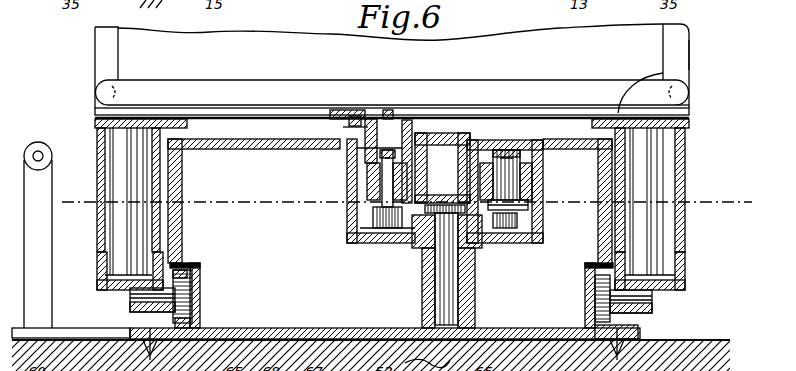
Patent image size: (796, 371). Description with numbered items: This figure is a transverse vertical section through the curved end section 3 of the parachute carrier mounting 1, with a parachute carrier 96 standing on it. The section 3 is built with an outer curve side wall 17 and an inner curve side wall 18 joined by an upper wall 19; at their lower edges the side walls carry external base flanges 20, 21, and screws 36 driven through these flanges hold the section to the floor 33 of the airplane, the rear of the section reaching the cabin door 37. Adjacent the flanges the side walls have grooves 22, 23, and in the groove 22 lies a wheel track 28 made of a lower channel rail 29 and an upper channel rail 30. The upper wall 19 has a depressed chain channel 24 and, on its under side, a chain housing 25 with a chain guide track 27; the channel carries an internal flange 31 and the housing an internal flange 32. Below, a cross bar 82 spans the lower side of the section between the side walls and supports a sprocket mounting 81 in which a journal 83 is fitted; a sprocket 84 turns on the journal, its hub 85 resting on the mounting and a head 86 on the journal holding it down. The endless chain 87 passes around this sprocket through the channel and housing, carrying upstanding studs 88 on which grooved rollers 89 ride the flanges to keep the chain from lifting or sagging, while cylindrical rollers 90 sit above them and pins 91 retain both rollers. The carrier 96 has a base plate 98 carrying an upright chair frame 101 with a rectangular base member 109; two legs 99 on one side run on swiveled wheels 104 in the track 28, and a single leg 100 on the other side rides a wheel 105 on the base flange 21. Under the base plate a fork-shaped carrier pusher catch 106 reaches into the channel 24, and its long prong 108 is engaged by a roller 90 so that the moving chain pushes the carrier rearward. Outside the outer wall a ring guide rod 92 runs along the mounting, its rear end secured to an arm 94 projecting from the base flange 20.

The parachute carrier mounting 1 is at (392, 125).
The curved end section 3 is at (164, 226).
The outer curve side wall 17 is at (183, 184).
The inner curve side wall 18 is at (600, 225).
The upper wall 19 is at (300, 149).
The base flange 20 is at (70, 199).
The base flange 21 is at (640, 330).
The groove 22 is at (186, 293).
The groove 23 is at (592, 302).
The chain channel 24 is at (360, 140).
The chain housing 25 is at (548, 170).
The chain guide track 27 is at (532, 216).
The wheel track 28 is at (167, 318).
The lower channel rail 29 is at (193, 328).
The upper channel rail 30 is at (187, 263).
The internal flange 31 is at (350, 186).
The internal flange 32 is at (570, 180).
The floor 33 is at (713, 339).
The screws 36 is at (158, 342).
The door 37 is at (442, 168).
The sprocket mounting 81 is at (430, 284).
The cross bar 82 is at (317, 328).
The journal 83 is at (450, 296).
The sprocket 84 is at (412, 225).
The hub 85 is at (478, 248).
The head 86 is at (445, 199).
The endless chain 87 is at (369, 219).
The studs 88 is at (387, 163).
The grooved rollers 89 is at (368, 178).
The cylindrical rollers 90 is at (465, 142).
The pins 91 is at (420, 148).
The ring guide rod 92 is at (34, 141).
The arm 94 is at (67, 328).
The parachute carrier 96 is at (377, 66).
The base plate 98 is at (690, 75).
The legs 99 is at (120, 218).
The leg 100 is at (668, 226).
The chair frame 101 is at (696, 58).
The swiveled wheels 104 is at (193, 285).
The wheel 105 is at (600, 291).
The carrier pusher catch 106 is at (352, 186).
The long prong 108 is at (402, 150).
The rectangular base member 109 is at (690, 103).